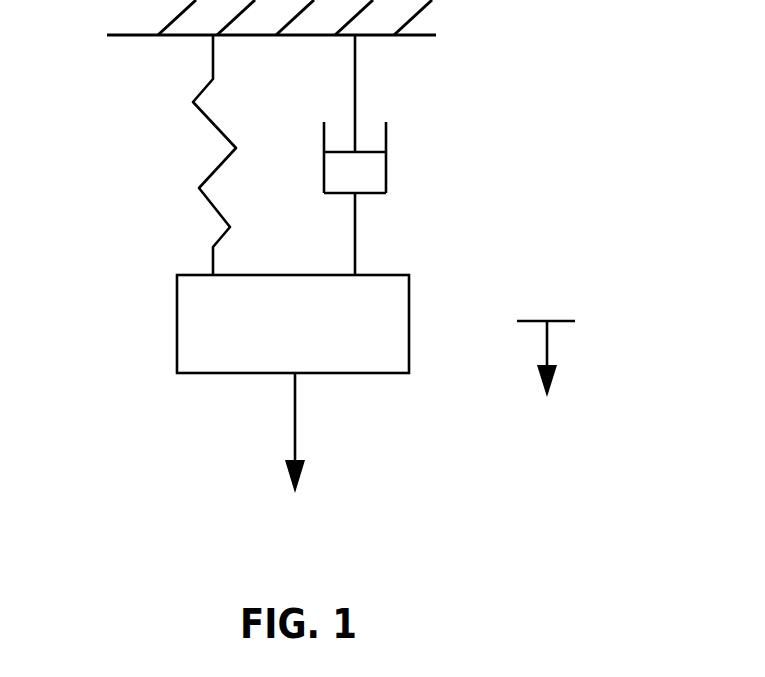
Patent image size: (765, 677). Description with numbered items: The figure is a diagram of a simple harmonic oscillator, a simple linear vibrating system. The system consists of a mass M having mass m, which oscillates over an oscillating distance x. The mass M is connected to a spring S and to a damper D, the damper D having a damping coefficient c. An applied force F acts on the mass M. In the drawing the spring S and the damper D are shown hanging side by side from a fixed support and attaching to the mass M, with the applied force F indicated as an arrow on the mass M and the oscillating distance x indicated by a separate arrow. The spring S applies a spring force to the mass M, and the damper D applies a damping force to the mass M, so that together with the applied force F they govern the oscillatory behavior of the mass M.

The spring S is at (210, 165).
The damper D is at (410, 155).
The damping coefficient c is at (379, 155).
The mass M is at (238, 324).
The mass m is at (293, 324).
The applied force F is at (318, 436).
The oscillating distance x is at (556, 362).